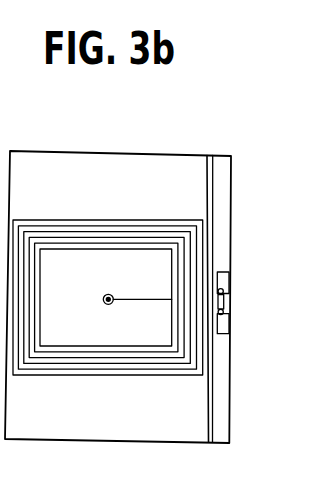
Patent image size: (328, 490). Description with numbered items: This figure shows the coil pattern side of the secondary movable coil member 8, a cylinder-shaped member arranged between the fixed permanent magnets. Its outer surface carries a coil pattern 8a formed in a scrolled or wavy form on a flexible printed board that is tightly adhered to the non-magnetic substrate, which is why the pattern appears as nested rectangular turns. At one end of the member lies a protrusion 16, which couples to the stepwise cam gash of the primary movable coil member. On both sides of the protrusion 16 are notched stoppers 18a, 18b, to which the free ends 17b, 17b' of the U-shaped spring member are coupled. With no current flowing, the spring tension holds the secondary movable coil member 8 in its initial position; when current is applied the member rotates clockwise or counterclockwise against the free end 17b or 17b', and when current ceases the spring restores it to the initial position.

The secondary movable coil member 8 is at (135, 167).
The coil pattern 8a is at (188, 250).
The notched stopper 18a is at (229, 274).
The free end of spring member 17b is at (257, 279).
The protrusion 16 is at (224, 305).
The free end of spring member 17b' is at (259, 325).
The notched stopper 18b is at (229, 324).